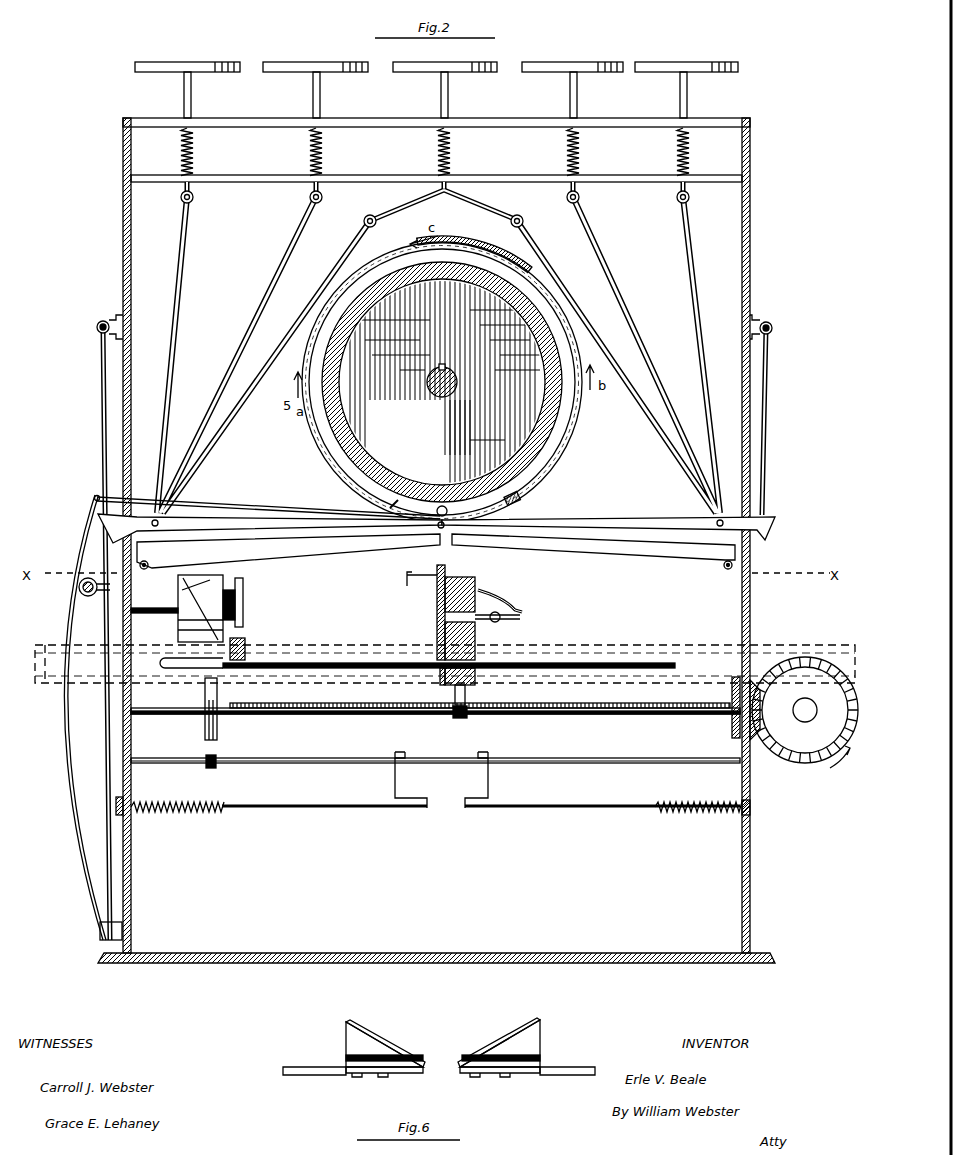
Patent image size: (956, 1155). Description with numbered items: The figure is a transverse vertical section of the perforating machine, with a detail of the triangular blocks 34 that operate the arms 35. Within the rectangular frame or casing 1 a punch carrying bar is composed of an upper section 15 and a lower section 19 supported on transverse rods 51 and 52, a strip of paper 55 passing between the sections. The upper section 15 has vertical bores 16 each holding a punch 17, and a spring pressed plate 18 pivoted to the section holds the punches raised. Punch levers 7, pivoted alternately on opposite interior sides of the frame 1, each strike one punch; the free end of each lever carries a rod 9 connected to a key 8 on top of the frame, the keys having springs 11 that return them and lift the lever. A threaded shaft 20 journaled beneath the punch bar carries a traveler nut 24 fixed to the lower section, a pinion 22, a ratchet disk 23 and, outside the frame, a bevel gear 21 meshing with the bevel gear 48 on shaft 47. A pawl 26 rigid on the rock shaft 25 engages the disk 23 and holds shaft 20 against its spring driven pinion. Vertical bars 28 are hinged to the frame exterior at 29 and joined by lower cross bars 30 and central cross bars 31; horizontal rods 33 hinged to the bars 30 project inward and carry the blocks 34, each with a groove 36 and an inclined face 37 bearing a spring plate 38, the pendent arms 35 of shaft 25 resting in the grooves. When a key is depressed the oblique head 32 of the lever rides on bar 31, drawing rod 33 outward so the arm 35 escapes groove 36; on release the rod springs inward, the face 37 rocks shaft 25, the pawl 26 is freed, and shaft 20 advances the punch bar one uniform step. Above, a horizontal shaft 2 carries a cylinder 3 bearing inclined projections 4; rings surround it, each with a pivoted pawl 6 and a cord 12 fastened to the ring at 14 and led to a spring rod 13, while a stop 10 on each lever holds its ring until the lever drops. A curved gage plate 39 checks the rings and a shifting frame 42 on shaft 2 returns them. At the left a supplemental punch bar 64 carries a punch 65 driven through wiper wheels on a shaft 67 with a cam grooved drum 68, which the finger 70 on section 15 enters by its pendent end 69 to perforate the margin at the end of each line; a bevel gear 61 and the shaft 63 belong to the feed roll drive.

In FIG. 2, the frame or casing 1 is at (750, 285).
In FIG. 2, the horizontal shaft 2 is at (428, 385).
In FIG. 2, the cylinder 3 is at (520, 448).
In FIG. 2, the inclined projections 4 is at (325, 441).
In FIG. 2, the pawl 6 is at (448, 500).
In FIG. 2, the punch lever 7 is at (436, 521).
In FIG. 2, the key 8 is at (200, 68).
In FIG. 2, the rod 9 is at (276, 270).
In FIG. 2, the stop pin or block 10 is at (421, 547).
In FIG. 2, the springs 11 is at (195, 150).
In FIG. 2, the cord or wire 12 is at (268, 501).
In FIG. 2, the spring rod 13 is at (70, 718).
In FIG. 2, the cord fastening point 14 is at (396, 500).
In FIG. 2, the upper section of punch bar 15 is at (475, 592).
In FIG. 2, the vertical bores 16 is at (440, 676).
In FIG. 2, the punch 17 is at (437, 640).
In FIG. 2, the spring pressed plate 18 is at (492, 630).
In FIG. 2, the lower section of punch bar 19 is at (475, 676).
In FIG. 2, the threaded shaft 20 is at (325, 718).
In FIG. 2, the bevel gear 21 is at (775, 665).
In FIG. 2, the pinion 22 is at (732, 686).
In FIG. 2, the ratchet disk 23 is at (205, 690).
In FIG. 2, the traveler nut 24 is at (465, 716).
In FIG. 2, the rock shaft 25 is at (565, 758).
In FIG. 2, the pawl 26 is at (216, 758).
In FIG. 2, the vertical bars 28 is at (108, 630).
In FIG. 2, the hinge 29 is at (97, 328).
In FIG. 2, the lower cross bar 30 is at (116, 805).
In FIG. 2, the central cross bar 31 is at (120, 548).
In FIG. 2, the oblique head 32 is at (97, 522).
In FIG. 2, the horizontal rod 33 is at (481, 820).
In FIG. 6, the horizontal rod 33 is at (303, 1067).
In FIG. 6, the triangular shaped block 34 is at (360, 1035).
In FIG. 2, the pendent arm 35 is at (403, 785).
In FIG. 6, the groove 36 is at (392, 1062).
In FIG. 6, the inclined face 37 is at (388, 1040).
In FIG. 6, the spring plate 38 is at (412, 1058).
In FIG. 2, the curved gage or regulating plate 39 is at (476, 248).
In FIG. 2, the shifting frame 42 is at (522, 505).
In FIG. 2, the shaft 47 is at (805, 722).
In FIG. 2, the bevel gear 48 is at (808, 763).
In FIG. 2, the transverse rod 51 is at (855, 645).
In FIG. 2, the transverse rod 52 is at (356, 688).
In FIG. 2, the strip of paper 55 is at (600, 660).
In FIG. 2, the bevel gear 61 is at (243, 607).
In FIG. 2, the shaft 63 is at (79, 592).
In FIG. 2, the supplemental punch bar 64 is at (245, 645).
In FIG. 2, the punch 65 is at (248, 660).
In FIG. 2, the shaft 67 is at (155, 620).
In FIG. 2, the cam grooved drum 68 is at (200, 583).
In FIG. 2, the pendent end 69 is at (412, 590).
In FIG. 2, the laterally projecting finger 70 is at (430, 585).